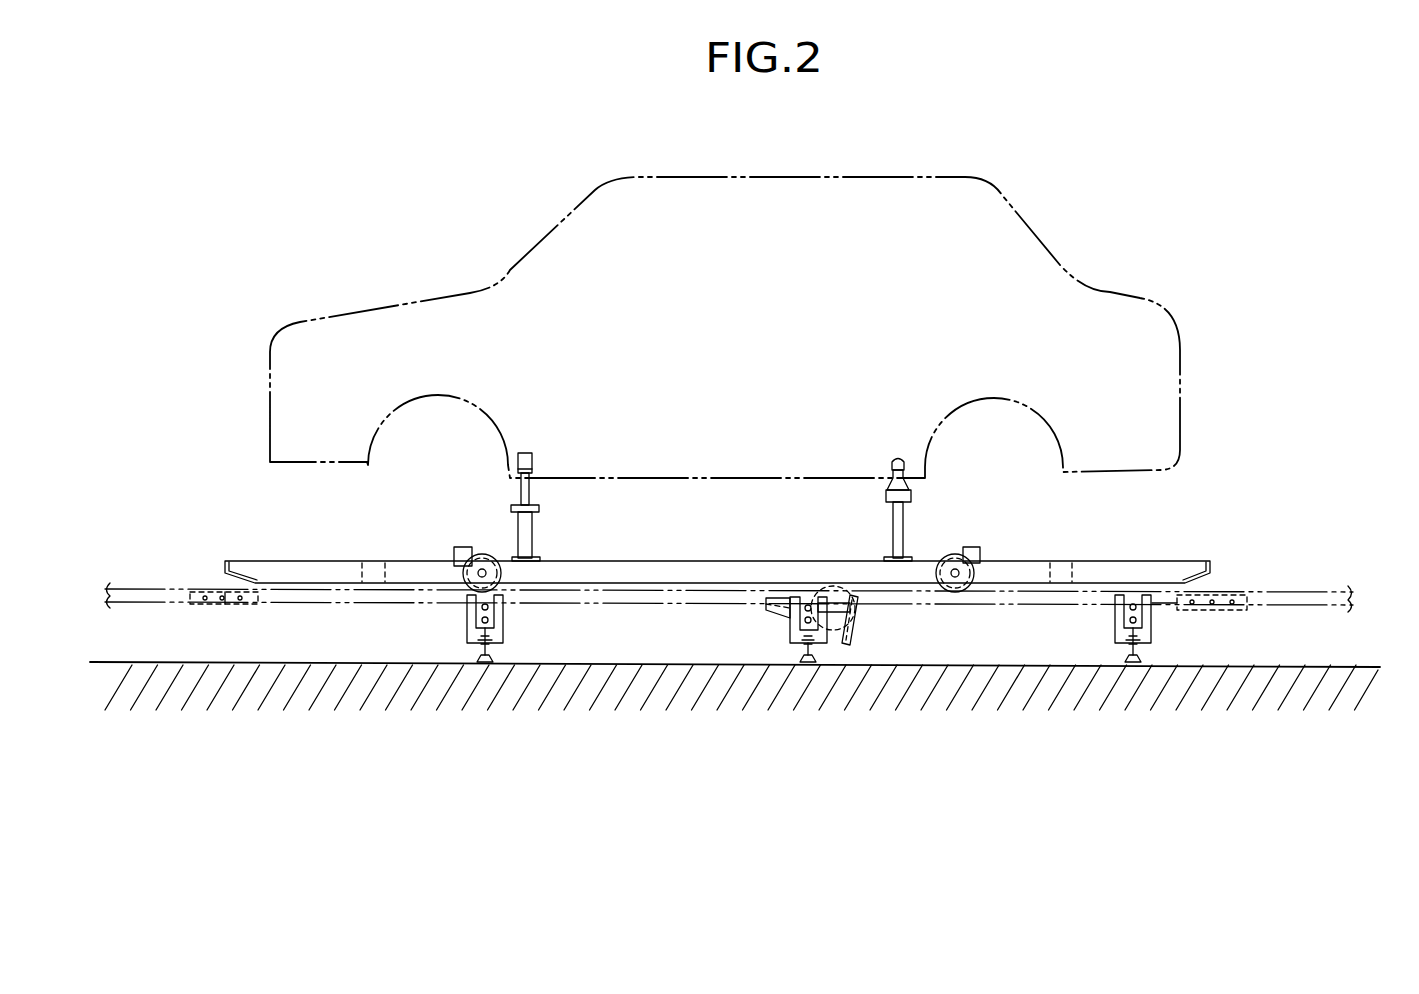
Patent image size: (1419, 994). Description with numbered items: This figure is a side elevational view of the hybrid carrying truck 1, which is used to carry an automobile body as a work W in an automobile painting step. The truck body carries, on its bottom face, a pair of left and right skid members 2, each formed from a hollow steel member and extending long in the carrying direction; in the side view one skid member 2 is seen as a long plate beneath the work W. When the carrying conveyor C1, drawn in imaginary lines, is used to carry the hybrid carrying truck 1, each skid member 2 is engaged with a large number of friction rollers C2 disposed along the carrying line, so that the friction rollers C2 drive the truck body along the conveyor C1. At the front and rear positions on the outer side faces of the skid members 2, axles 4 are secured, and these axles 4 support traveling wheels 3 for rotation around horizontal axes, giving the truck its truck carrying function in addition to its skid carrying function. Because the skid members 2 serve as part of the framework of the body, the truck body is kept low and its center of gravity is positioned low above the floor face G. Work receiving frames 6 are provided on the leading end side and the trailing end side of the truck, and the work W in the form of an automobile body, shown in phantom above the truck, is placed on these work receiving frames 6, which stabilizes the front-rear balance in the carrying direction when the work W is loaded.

The work W is at (843, 177).
The hybrid carrying truck 1 is at (1122, 540).
The skid member 2 is at (703, 561).
The traveling wheel 3 is at (460, 575).
The axle 4 is at (488, 553).
The work receiving frame 6 is at (532, 538).
The carrying conveyor C1 is at (1283, 590).
The friction roller C2 is at (832, 648).
The floor face G is at (1365, 664).